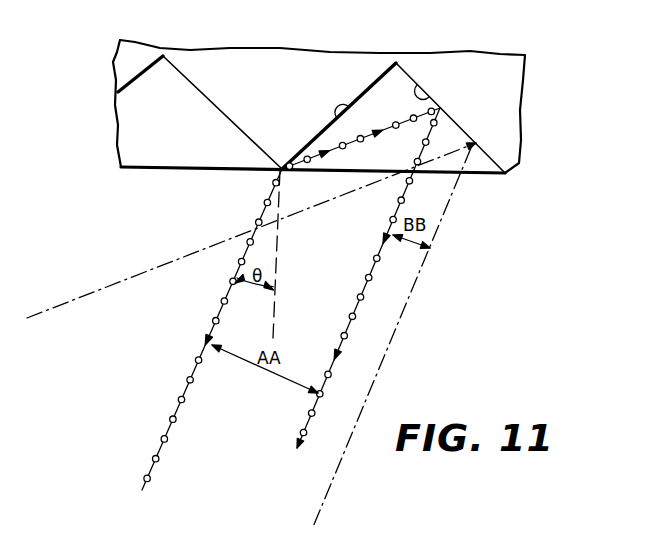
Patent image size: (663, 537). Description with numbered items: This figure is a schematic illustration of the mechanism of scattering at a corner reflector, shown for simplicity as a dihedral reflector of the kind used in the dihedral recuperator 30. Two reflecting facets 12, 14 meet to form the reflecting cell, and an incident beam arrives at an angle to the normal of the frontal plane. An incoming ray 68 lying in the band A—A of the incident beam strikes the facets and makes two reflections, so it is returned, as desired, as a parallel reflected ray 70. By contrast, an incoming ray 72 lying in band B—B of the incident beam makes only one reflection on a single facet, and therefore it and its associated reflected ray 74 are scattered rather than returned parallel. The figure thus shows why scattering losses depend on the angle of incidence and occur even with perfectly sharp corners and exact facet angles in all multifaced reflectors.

The dihedral recuperator 30 is at (513, 49).
The reflecting facet 12 is at (429, 97).
The reflecting facet 14 is at (339, 116).
The incoming ray 68 is at (180, 410).
The parallel reflected ray 70 is at (309, 416).
The incoming ray 72 is at (400, 322).
The reflected ray 74 is at (160, 268).